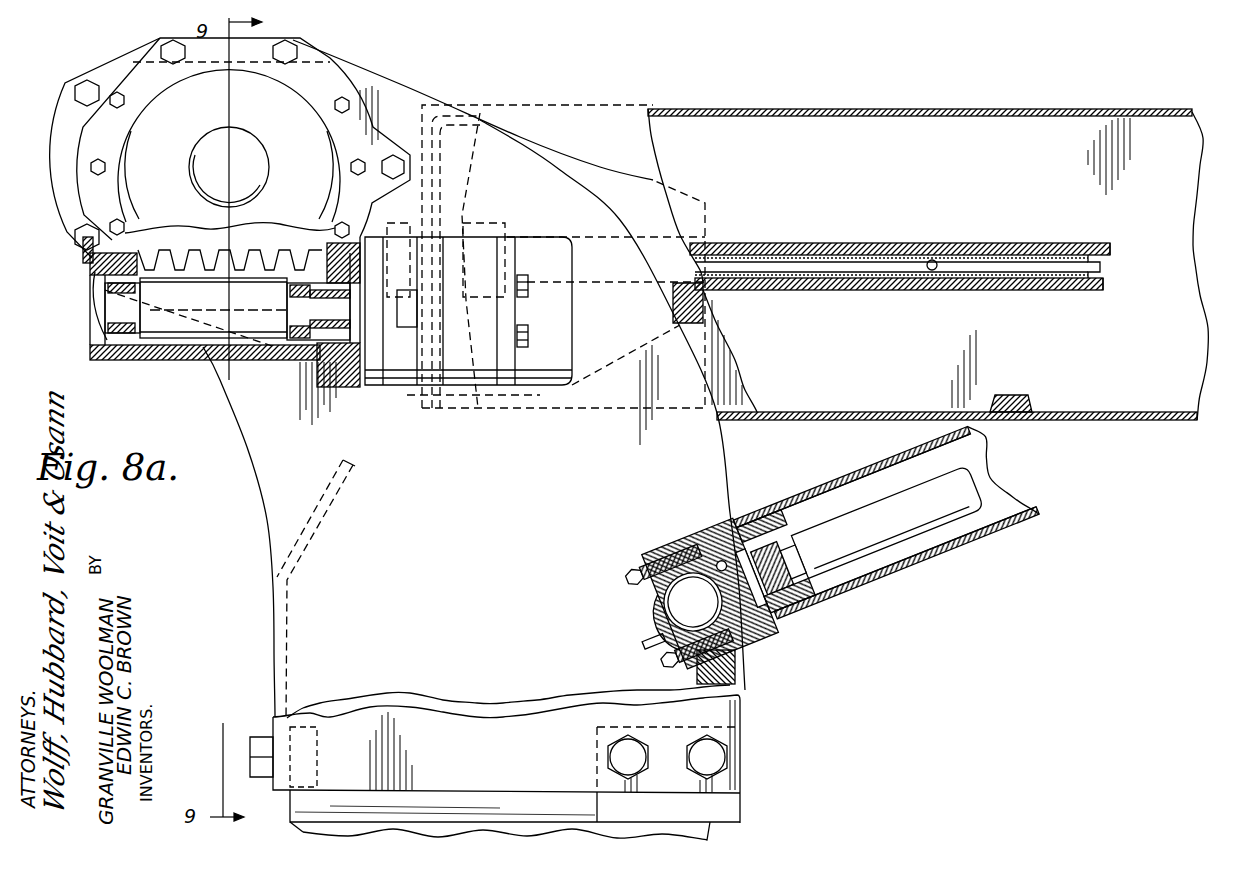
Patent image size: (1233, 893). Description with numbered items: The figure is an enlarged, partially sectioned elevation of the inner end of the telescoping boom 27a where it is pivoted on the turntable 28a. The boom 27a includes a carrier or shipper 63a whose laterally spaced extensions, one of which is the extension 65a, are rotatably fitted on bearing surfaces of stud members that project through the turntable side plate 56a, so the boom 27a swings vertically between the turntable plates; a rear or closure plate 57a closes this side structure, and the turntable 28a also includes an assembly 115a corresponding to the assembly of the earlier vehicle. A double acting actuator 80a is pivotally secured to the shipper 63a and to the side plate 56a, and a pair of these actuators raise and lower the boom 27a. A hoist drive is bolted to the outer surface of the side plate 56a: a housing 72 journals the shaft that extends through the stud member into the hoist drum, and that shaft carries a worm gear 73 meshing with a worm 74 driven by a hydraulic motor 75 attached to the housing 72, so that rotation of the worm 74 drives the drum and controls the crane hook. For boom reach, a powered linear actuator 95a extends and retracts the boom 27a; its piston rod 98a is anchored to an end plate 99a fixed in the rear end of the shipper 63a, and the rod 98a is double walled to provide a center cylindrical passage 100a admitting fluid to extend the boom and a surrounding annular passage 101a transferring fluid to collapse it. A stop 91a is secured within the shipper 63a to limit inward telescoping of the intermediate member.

The housing 72 is at (166, 192).
The worm gear 73 is at (210, 262).
The worm 74 is at (248, 345).
The hydraulic motor 75 is at (404, 372).
The end plate 99a is at (440, 190).
The extension 65a is at (640, 180).
The side plate 56a is at (280, 522).
The rear or closure plate 57a is at (328, 522).
The boom 27a is at (1114, 425).
The shipper 63a is at (875, 421).
The stop 91a is at (1025, 394).
The piston rod 98a is at (850, 244).
The center cylindrical passage 100a is at (935, 260).
The powered linear actuator 95a is at (1085, 244).
The annular passage 101a is at (1045, 275).
The double acting actuator 80a is at (905, 576).
The turntable 28a is at (745, 720).
The assembly 115a is at (748, 810).